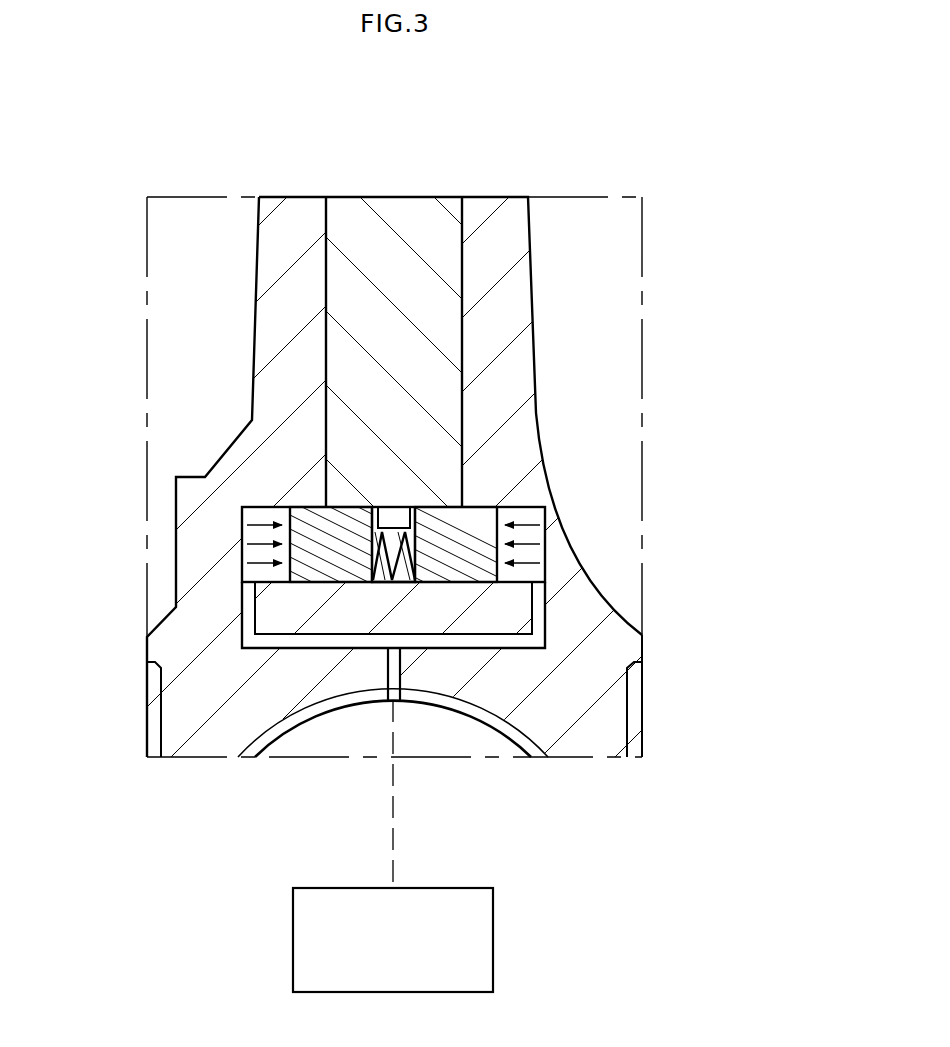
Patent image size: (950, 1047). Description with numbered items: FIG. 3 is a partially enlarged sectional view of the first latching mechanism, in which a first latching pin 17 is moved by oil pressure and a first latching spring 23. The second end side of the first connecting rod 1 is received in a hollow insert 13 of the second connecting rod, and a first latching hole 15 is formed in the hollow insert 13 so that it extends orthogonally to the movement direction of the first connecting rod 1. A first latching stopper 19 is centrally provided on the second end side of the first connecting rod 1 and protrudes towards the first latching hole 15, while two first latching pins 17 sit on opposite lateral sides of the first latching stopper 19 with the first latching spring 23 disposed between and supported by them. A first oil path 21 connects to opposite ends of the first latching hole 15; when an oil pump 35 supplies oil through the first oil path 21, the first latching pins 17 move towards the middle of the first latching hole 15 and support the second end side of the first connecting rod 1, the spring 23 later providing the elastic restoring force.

The first connecting rod 1 is at (392, 282).
The hollow insert 13 is at (510, 328).
The first latching hole 15 is at (250, 520).
The first latching pin 17 is at (327, 559).
The first latching stopper 19 is at (390, 505).
The first oil path 21 is at (258, 650).
The first latching spring 23 is at (408, 583).
The oil pump 35 is at (493, 940).